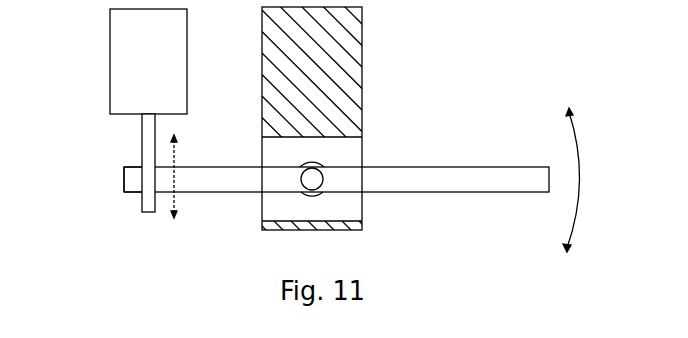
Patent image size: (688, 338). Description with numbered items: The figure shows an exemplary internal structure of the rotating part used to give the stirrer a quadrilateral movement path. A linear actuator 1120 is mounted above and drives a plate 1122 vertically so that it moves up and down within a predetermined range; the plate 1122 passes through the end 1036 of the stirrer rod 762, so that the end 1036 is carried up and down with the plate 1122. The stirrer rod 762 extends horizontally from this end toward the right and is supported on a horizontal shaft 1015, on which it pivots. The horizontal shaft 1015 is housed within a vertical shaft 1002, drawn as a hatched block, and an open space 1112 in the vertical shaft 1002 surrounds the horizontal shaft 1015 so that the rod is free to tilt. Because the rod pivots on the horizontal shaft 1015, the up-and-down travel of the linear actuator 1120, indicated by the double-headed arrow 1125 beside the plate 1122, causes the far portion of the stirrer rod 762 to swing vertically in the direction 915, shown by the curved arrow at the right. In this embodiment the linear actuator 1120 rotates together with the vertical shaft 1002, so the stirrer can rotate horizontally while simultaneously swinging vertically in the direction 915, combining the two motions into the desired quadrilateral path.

The stirrer rod 762 is at (465, 172).
The direction 915 is at (592, 180).
The vertical shaft 1002 is at (355, 70).
The horizontal shaft 1015 is at (314, 179).
The end 1036 is at (134, 194).
The open space 1112 is at (352, 207).
The linear actuator 1120 is at (110, 66).
The plate 1122 is at (142, 146).
The direction of motion 1125 is at (182, 192).